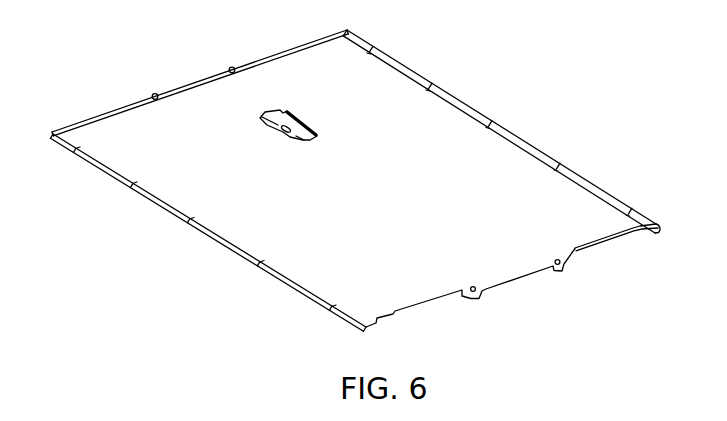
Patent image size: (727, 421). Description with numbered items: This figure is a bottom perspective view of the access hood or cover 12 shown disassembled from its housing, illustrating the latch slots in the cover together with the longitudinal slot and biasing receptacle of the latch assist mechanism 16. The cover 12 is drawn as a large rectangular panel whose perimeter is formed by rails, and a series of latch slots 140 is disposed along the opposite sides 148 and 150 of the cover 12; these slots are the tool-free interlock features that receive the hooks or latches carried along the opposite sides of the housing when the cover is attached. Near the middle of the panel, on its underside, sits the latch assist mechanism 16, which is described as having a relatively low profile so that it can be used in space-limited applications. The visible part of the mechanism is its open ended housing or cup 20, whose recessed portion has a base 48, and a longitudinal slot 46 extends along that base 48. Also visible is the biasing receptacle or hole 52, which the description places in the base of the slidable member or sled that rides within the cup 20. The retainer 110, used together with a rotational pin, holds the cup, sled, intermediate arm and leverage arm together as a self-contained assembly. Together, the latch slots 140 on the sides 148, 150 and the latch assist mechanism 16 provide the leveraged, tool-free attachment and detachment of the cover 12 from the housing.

The access hood or cover 12 is at (505, 85).
The latch assist mechanism 16 is at (266, 91).
The open ended housing or cup 20 is at (301, 141).
The longitudinal slot 46 is at (283, 133).
The base 48 is at (273, 122).
The biasing receptacle or hole 52 is at (290, 140).
The retainer 110 is at (301, 139).
The latch slots 140 is at (374, 54).
The side of the access hood or cover 148 is at (218, 240).
The side of the access hood or cover 150 is at (548, 148).